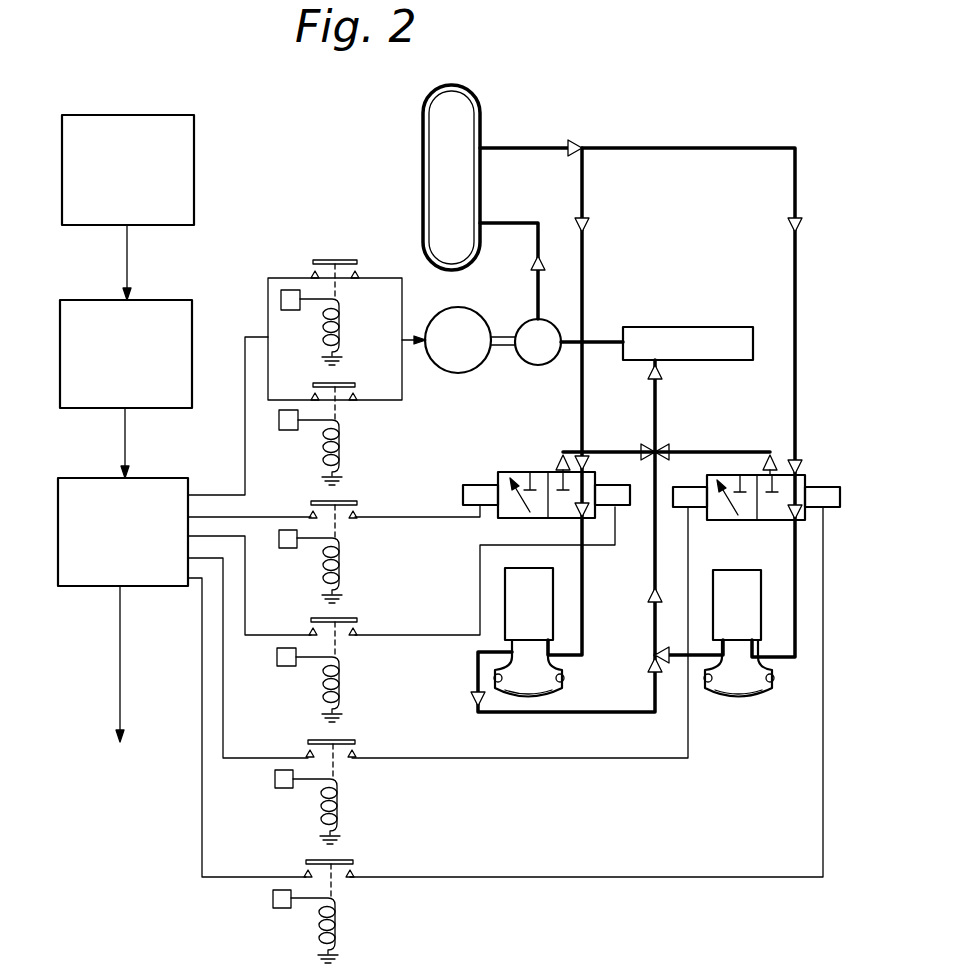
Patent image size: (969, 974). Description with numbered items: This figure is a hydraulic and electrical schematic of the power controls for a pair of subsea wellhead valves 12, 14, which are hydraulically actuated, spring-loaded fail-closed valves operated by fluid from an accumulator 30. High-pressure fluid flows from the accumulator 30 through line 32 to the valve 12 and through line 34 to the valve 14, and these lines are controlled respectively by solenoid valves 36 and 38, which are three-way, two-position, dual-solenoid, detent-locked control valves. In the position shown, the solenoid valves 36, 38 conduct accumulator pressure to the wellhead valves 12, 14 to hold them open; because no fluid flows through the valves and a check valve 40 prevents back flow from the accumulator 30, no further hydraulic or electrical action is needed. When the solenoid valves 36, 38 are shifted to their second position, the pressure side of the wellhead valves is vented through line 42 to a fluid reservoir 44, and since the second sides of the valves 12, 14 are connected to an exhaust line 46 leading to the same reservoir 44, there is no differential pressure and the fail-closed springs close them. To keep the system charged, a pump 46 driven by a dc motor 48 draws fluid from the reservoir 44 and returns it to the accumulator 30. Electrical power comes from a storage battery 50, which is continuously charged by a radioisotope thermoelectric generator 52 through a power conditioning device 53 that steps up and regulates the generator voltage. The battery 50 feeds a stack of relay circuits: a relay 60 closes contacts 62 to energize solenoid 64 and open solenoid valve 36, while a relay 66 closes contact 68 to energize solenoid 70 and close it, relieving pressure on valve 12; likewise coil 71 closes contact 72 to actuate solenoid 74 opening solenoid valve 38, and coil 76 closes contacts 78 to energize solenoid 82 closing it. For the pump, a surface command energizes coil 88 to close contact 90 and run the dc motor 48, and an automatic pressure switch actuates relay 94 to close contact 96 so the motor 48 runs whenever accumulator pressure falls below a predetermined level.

The wellhead valve 12 is at (540, 692).
The wellhead valve 14 is at (733, 688).
The accumulator 30 is at (443, 158).
The line 32 is at (585, 262).
The line 34 is at (797, 278).
The solenoid valve 36 is at (532, 471).
The solenoid valve 38 is at (805, 475).
The check valve 40 is at (533, 266).
The line 42 is at (658, 400).
The fluid reservoir 44 is at (687, 326).
The pump 46 is at (541, 368).
The dc motor 48 is at (452, 373).
The storage battery 50 is at (76, 590).
The generator 52 is at (196, 142).
The power conditioning device 53 is at (194, 305).
The relay 60 is at (342, 560).
The contacts 62 is at (338, 498).
The solenoid 64 is at (463, 490).
The relay 66 is at (342, 680).
The contact 68 is at (338, 617).
The solenoid 70 is at (628, 507).
The coil 71 is at (340, 800).
The contact 72 is at (335, 740).
The solenoid 74 is at (686, 487).
The coil 76 is at (340, 923).
The contacts 78 is at (333, 860).
The solenoid 82 is at (842, 495).
The coil 88 is at (340, 443).
The contact 90 is at (348, 382).
The relay 94 is at (340, 325).
The contact 96 is at (335, 260).